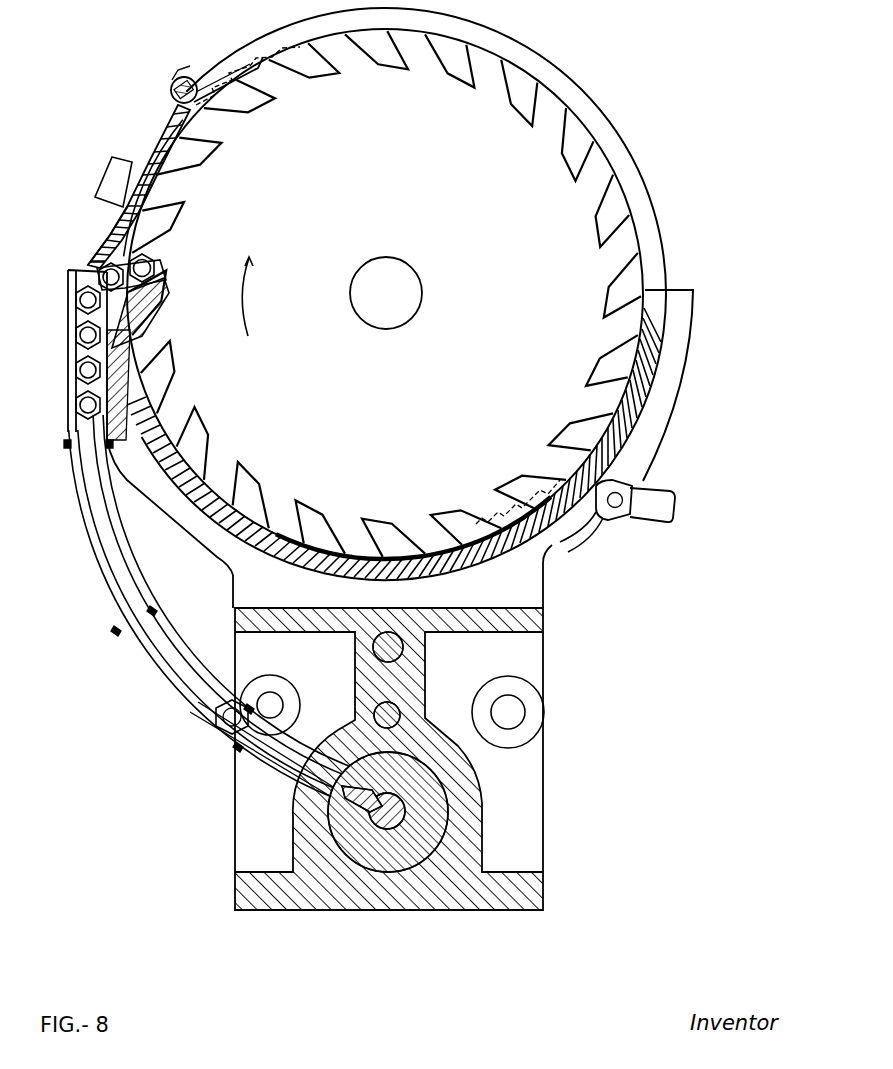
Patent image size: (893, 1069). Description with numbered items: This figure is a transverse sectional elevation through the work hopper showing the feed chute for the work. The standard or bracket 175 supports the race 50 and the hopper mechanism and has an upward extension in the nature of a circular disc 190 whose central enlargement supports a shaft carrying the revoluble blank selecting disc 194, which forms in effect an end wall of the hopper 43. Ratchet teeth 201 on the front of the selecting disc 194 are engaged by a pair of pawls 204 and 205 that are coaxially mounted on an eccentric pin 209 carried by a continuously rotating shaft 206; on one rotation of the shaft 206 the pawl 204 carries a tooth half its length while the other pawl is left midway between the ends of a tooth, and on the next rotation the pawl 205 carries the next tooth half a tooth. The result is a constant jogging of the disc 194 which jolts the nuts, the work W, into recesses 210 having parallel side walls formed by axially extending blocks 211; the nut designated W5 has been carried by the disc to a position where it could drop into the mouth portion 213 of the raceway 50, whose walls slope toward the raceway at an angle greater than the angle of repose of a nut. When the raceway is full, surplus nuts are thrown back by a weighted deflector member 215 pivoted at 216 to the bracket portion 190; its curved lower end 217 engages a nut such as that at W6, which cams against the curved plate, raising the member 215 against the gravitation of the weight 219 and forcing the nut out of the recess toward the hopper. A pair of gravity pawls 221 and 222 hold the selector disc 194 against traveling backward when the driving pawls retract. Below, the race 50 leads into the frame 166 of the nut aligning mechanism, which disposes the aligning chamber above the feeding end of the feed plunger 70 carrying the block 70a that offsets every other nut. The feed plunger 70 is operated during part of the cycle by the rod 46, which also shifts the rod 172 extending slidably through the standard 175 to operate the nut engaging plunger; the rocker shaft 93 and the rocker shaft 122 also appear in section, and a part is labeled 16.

The blank selecting disc 194 is at (384, 294).
The circular disc 190 is at (571, 56).
The hopper 43 is at (666, 338).
The recesses 210 is at (160, 250).
The axially extending blocks 211 is at (311, 516).
The mouth portion of the raceway 213 is at (85, 284).
The work W is at (80, 335).
The nut in recess W5 is at (162, 268).
The nut at deflector W6 is at (90, 263).
The weighted deflector member 215 is at (150, 152).
The curved lower end 217 is at (114, 252).
The weight 219 is at (105, 183).
The pivot 216 is at (170, 88).
The gravity pawl 221 is at (208, 80).
The gravity pawl 222 is at (232, 66).
The ratchet teeth 201 is at (292, 46).
The shaft 206 is at (618, 478).
The eccentric pin 209 is at (628, 502).
The pawl 205 is at (592, 522).
The pawl 204 is at (580, 522).
The race 50 is at (92, 572).
The arm 16 is at (193, 703).
The standard 175 is at (540, 628).
The rocker shaft 93 is at (278, 705).
The rocker shaft 122 is at (520, 713).
The control rod 46 is at (405, 646).
The rod 172 is at (400, 716).
The frame of nut aligning mechanism 166 is at (425, 787).
The feed plunger 70 is at (392, 822).
The block 70a is at (366, 803).